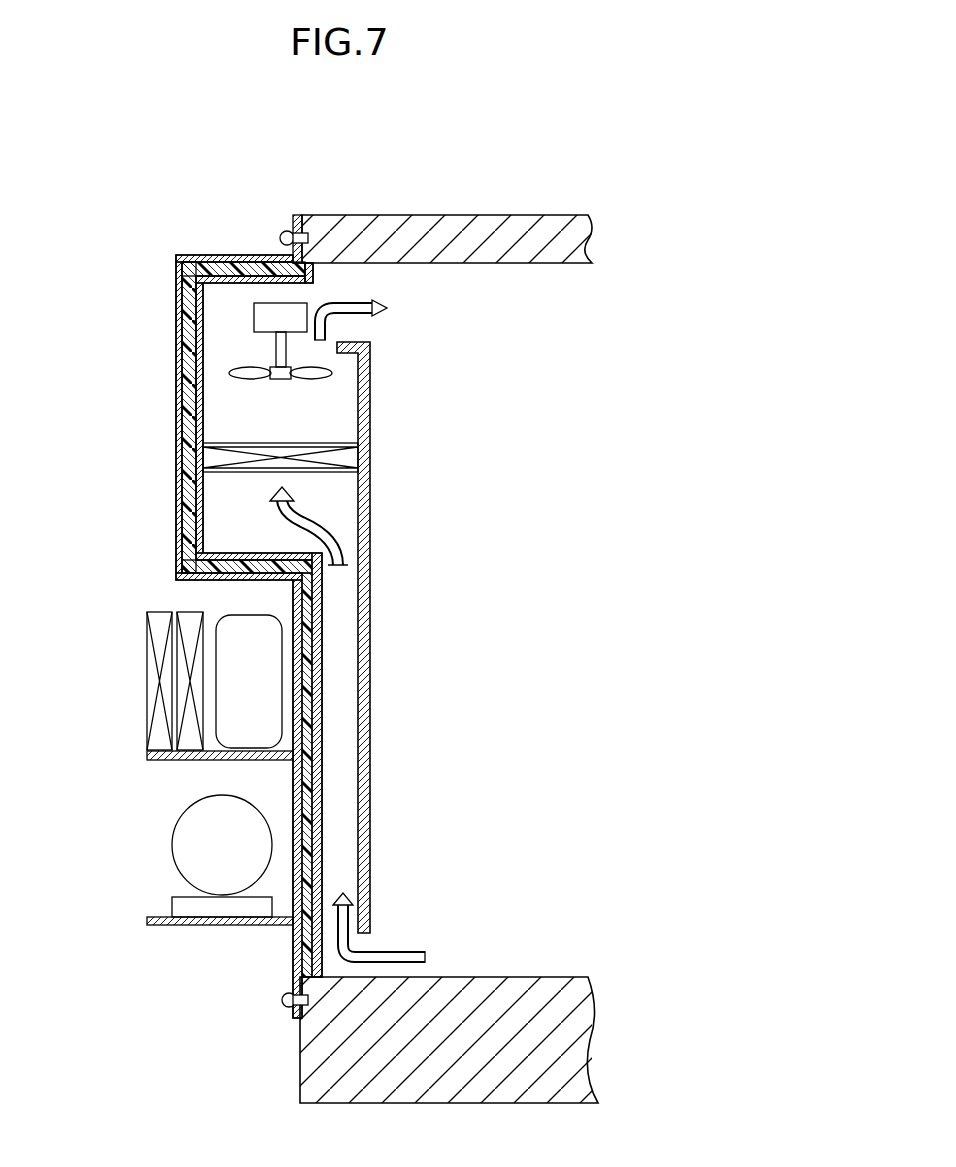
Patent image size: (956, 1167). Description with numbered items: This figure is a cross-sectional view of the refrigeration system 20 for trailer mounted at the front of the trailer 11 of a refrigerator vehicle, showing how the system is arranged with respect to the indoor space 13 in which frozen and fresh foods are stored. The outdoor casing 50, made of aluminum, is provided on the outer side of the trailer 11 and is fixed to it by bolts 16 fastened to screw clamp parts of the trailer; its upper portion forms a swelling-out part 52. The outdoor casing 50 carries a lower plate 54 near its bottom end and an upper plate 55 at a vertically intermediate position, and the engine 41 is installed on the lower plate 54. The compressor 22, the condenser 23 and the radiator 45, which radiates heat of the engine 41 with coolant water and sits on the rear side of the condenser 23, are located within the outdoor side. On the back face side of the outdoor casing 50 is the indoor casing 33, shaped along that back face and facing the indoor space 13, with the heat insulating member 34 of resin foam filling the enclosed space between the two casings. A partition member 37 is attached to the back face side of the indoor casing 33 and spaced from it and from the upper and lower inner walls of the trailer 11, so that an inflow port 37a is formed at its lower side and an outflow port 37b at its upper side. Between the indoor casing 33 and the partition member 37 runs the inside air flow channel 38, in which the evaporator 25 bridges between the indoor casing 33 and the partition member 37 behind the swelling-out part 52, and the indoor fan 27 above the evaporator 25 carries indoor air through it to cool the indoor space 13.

The trailer 11 is at (431, 215).
The indoor space 13 is at (498, 672).
The bolt 16 is at (284, 236).
The refrigeration system for trailer 20 is at (209, 551).
The compressor 22 is at (245, 678).
The condenser 23 is at (157, 623).
The evaporator 25 is at (303, 448).
The indoor fan 27 is at (270, 325).
The indoor casing 33 is at (248, 554).
The heat insulating member 34 is at (190, 327).
The partition member 37 is at (365, 488).
The inflow port 37a is at (355, 942).
The outflow port 37b is at (328, 343).
The inside air flow channel 38 is at (335, 507).
The engine 41 is at (180, 845).
The radiator 45 is at (188, 617).
The outdoor casing 50 is at (178, 505).
The swelling-out part 52 is at (180, 280).
The lower plate 54 is at (153, 923).
The upper plate 55 is at (153, 758).